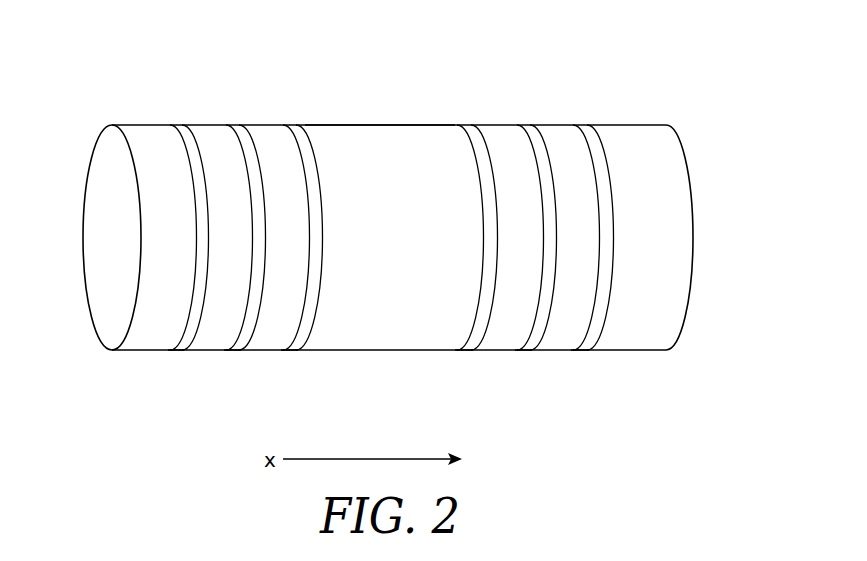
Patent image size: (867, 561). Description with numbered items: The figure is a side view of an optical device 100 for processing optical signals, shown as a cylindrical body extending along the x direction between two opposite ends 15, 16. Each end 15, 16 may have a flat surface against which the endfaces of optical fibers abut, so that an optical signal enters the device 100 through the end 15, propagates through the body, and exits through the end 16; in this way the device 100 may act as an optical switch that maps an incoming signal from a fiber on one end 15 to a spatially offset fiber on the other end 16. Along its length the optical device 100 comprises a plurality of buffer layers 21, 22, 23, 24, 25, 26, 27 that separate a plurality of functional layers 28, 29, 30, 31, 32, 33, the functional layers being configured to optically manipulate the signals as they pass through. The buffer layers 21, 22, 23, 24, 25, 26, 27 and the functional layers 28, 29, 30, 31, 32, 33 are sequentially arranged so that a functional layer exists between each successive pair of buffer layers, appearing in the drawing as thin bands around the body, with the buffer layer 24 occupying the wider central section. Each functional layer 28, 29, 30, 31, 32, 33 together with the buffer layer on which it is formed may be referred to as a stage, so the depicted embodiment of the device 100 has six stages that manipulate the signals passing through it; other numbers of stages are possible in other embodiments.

The optical device 100 is at (683, 73).
The end 15 is at (103, 243).
The end 16 is at (693, 261).
The buffer layer 21 is at (155, 125).
The buffer layer 22 is at (212, 125).
The buffer layer 23 is at (265, 125).
The buffer layer 24 is at (386, 125).
The buffer layer 25 is at (493, 125).
The buffer layer 26 is at (547, 125).
The buffer layer 27 is at (604, 125).
The functional layer 28 is at (178, 350).
The functional layer 29 is at (233, 350).
The functional layer 30 is at (287, 350).
The functional layer 31 is at (465, 350).
The functional layer 32 is at (522, 350).
The functional layer 33 is at (577, 350).